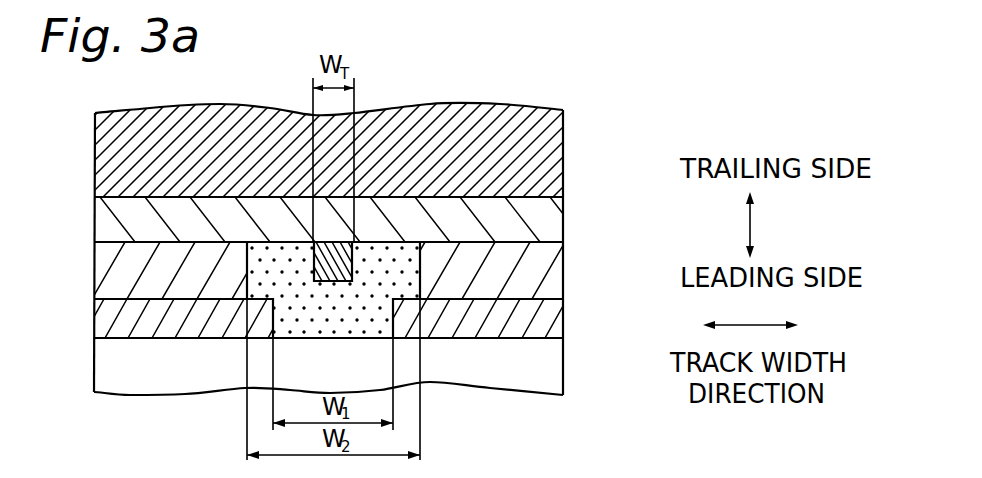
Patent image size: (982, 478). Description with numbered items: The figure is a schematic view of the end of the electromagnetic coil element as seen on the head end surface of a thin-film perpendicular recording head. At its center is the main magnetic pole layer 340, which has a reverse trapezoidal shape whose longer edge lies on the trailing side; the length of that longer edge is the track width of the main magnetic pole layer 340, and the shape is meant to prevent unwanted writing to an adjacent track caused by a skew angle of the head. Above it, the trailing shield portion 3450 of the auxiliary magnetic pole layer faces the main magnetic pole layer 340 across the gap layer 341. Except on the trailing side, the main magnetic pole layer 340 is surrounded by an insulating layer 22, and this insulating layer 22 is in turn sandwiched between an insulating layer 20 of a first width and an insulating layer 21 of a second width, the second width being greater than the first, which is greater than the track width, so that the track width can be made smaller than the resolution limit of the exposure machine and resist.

The trailing shield portion 3450 is at (553, 155).
The gap layer 341 is at (550, 217).
The insulating layer 22 is at (292, 267).
The insulating layer 21 is at (103, 264).
The insulating layer 20 is at (103, 321).
The main magnetic pole layer 340 is at (352, 262).